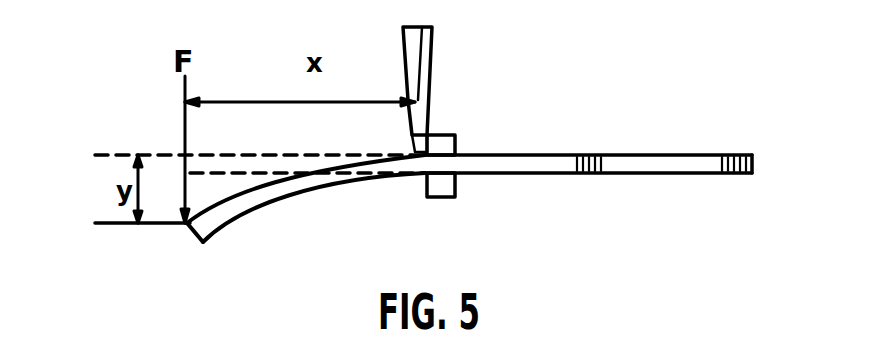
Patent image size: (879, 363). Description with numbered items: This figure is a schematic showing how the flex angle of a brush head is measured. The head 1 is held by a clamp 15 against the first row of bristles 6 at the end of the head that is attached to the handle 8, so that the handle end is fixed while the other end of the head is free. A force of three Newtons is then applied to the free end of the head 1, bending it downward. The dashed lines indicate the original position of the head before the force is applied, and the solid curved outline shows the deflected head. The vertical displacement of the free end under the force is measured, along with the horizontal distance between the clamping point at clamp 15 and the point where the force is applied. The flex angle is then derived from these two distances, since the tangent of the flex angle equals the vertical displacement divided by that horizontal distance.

The head 1 is at (287, 190).
The first row of bristles 6 is at (432, 30).
The handle 8 is at (677, 183).
The clamp 15 is at (455, 150).